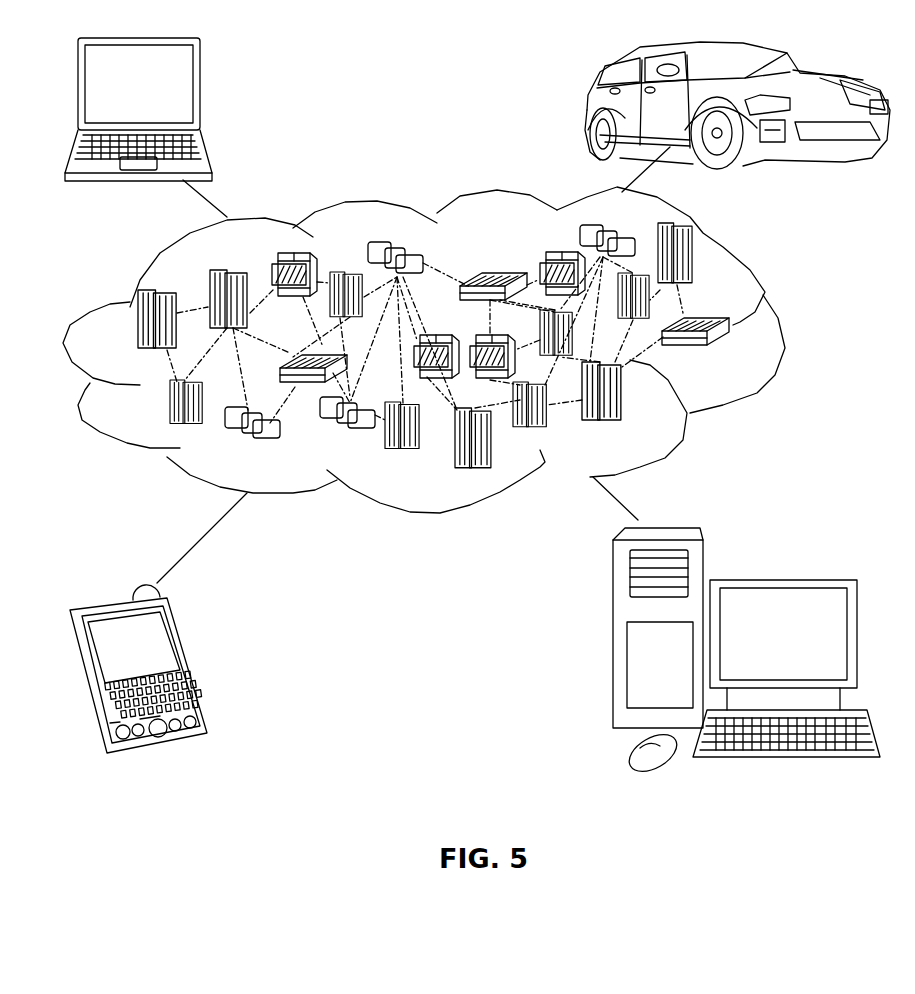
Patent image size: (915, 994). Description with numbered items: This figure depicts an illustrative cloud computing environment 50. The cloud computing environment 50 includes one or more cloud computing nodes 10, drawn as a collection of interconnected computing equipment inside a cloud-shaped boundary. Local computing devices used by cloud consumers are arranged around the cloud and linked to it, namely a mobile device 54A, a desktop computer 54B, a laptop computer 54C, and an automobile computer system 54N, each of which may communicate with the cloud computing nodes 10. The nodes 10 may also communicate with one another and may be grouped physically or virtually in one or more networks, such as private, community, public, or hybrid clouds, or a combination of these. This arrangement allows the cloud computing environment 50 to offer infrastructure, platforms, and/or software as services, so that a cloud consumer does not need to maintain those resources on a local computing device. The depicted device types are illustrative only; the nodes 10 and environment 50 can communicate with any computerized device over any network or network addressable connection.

The cloud computing environment 50 is at (782, 327).
The cloud computing nodes 10 is at (733, 357).
The mobile device 54A is at (190, 660).
The desktop computer 54B is at (782, 580).
The laptop computer 54C is at (200, 92).
The automobile computer system 54N is at (587, 108).